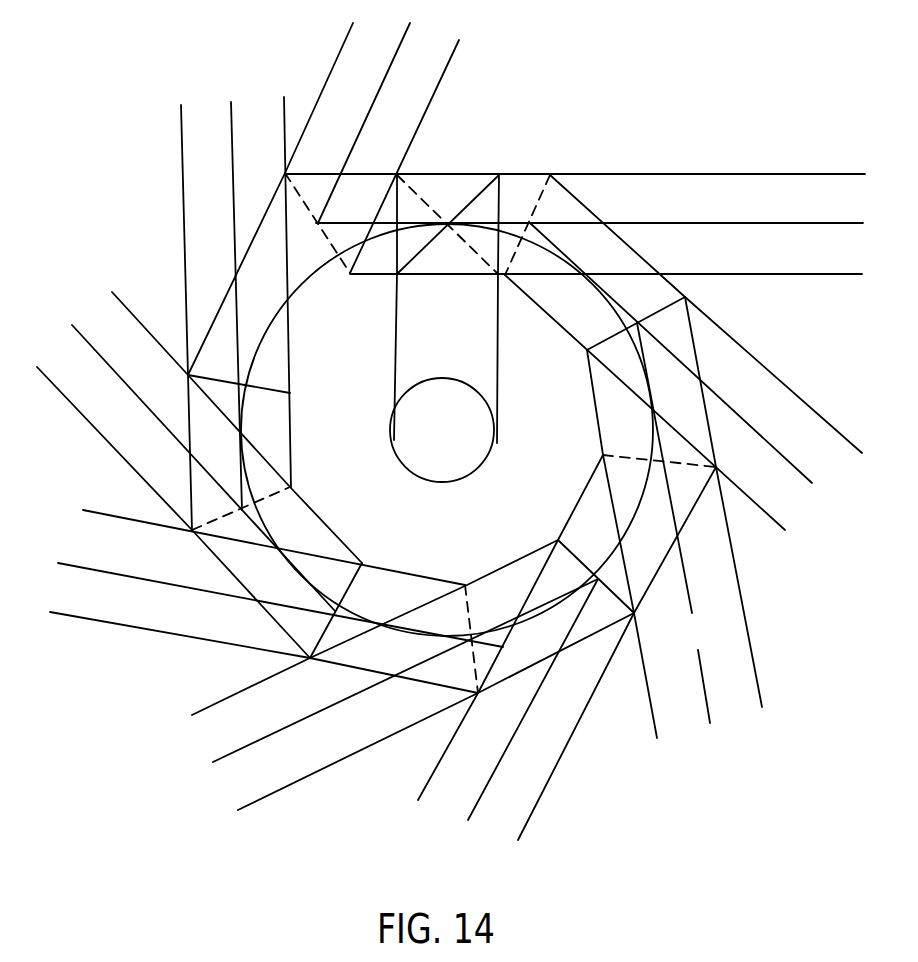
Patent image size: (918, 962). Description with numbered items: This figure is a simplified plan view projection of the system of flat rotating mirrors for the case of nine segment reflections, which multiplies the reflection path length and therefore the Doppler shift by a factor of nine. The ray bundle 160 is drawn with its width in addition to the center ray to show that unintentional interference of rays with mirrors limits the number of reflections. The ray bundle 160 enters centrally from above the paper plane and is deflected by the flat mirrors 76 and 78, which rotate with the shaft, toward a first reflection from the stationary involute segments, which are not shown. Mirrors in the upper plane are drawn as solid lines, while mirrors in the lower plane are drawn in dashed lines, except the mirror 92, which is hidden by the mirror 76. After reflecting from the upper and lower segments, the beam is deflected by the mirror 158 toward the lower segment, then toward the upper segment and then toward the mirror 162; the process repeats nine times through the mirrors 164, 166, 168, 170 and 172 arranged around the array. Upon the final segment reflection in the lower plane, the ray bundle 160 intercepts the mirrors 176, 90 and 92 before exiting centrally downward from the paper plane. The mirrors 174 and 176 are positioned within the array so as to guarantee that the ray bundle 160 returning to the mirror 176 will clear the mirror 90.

The ray bundle 160 is at (181, 173).
The mirror 176 is at (285, 173).
The mirror 158 is at (550, 175).
The mirror 162 is at (690, 297).
The mirror 164 is at (718, 467).
The mirror 166 is at (636, 616).
The mirror 168 is at (481, 696).
The mirror 170 is at (310, 663).
The mirror 172 is at (192, 532).
The mirror 174 is at (188, 375).
The flat mirror 78 is at (477, 175).
The flat mirror 90 is at (491, 271).
The flat mirror 76 is at (483, 430).
The flat mirror 92 is at (480, 445).